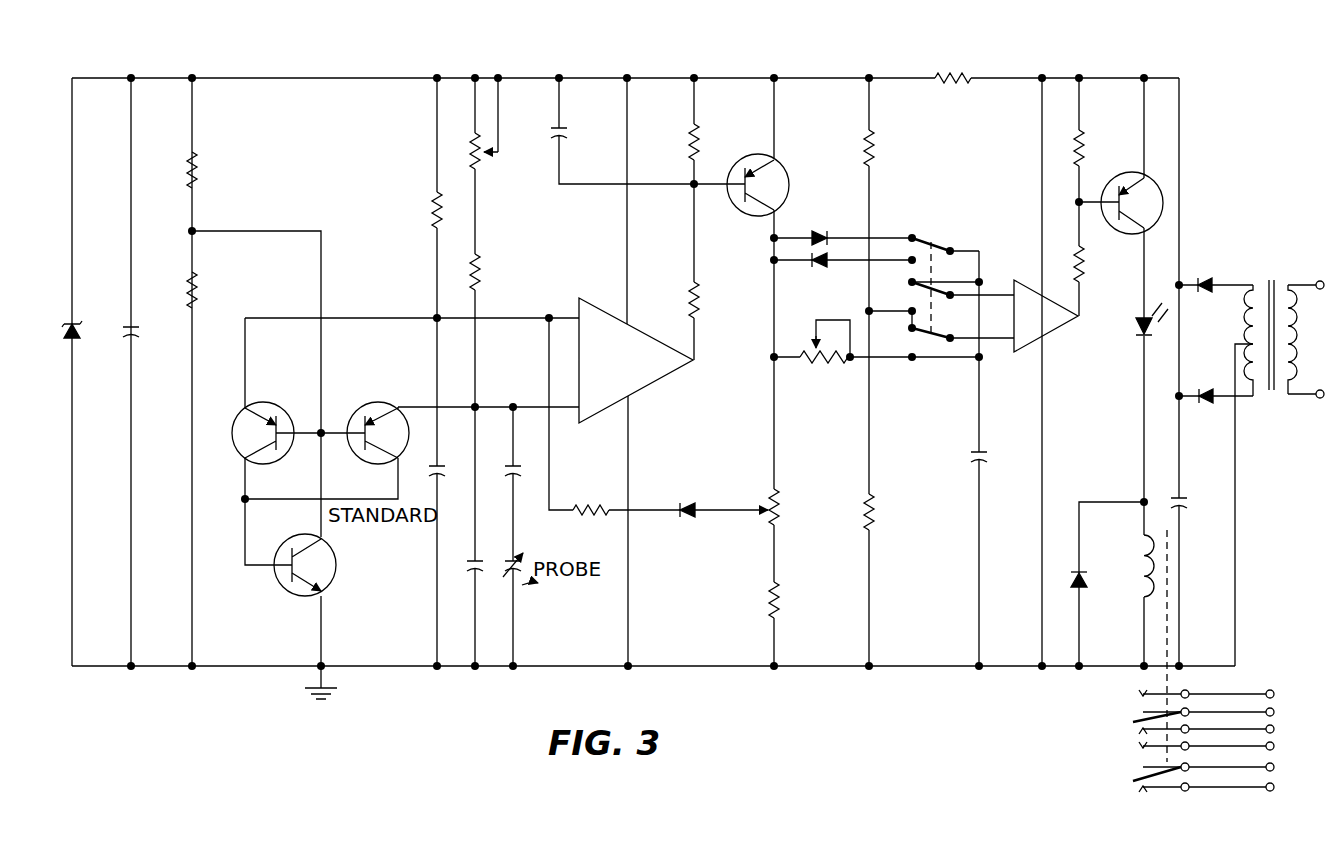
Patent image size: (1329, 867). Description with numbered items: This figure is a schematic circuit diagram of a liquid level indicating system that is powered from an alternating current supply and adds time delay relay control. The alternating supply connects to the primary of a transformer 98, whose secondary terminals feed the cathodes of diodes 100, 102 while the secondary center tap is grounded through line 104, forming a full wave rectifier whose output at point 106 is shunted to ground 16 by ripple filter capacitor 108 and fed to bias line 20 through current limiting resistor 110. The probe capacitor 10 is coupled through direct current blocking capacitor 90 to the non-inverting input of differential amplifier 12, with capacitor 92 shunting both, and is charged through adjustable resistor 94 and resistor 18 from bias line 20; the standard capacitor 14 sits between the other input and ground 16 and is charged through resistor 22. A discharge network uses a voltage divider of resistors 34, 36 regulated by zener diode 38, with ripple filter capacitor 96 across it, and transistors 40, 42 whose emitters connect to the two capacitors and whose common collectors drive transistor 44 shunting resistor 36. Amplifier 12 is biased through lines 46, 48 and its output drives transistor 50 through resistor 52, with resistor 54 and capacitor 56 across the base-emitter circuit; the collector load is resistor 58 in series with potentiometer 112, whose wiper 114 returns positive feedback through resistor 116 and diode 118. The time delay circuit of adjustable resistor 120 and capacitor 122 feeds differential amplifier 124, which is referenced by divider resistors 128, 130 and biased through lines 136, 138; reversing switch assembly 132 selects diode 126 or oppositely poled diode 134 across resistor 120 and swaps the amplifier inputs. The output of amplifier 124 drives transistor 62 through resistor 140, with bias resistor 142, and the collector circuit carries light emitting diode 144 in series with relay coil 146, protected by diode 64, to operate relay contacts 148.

The probe capacitor 10 is at (510, 578).
The differential amplifier 12 is at (632, 342).
The standard capacitor 14 is at (435, 468).
The ground 16 is at (690, 668).
The resistor 18 is at (420, 228).
The bias line 20 is at (358, 78).
The resistor 22 is at (492, 288).
The resistor 34 is at (208, 192).
The resistor 36 is at (208, 312).
The zener diode 38 is at (82, 330).
The transistor 40 is at (272, 392).
The transistor 42 is at (393, 392).
The transistor 44 is at (329, 572).
The line 46 is at (626, 586).
The line 48 is at (624, 230).
The transistor 50 is at (776, 198).
The resistor 52 is at (710, 322).
The resistor 54 is at (710, 164).
The capacitor 56 is at (580, 128).
The resistor 58 is at (766, 620).
The transistor 62 is at (1148, 188).
The protective diode 64 is at (1087, 574).
The direct current blocking capacitor 90 is at (520, 476).
The capacitor 92 is at (466, 560).
The adjustable resistor 94 is at (472, 136).
The ripple filter capacitor 96 is at (142, 332).
The transformer 98 is at (1258, 264).
The diode 100 is at (1228, 270).
The diode 102 is at (1206, 404).
The line 104 is at (1236, 576).
The point 106 is at (1180, 114).
The ripple filter capacitor 108 is at (1197, 500).
The current limiting resistor 110 is at (972, 84).
The potentiometer 112 is at (792, 528).
The wiper 114 is at (763, 504).
The resistor 116 is at (611, 535).
The diode 118 is at (708, 528).
The adjustable resistor 120 is at (800, 370).
The capacitor 122 is at (970, 454).
The differential amplifier 124 is at (1052, 338).
The diode 126 is at (839, 226).
The resistor 128 is at (886, 170).
The resistor 130 is at (886, 534).
The reversing switch assembly 132 is at (950, 230).
The diode 134 is at (830, 267).
The line 136 is at (1034, 172).
The line 138 is at (1040, 540).
The resistor 140 is at (1095, 286).
The bias resistor 142 is at (1095, 168).
The light emitting diode 144 is at (1134, 324).
The coil 146 is at (1140, 588).
The contacts 148 is at (1124, 718).